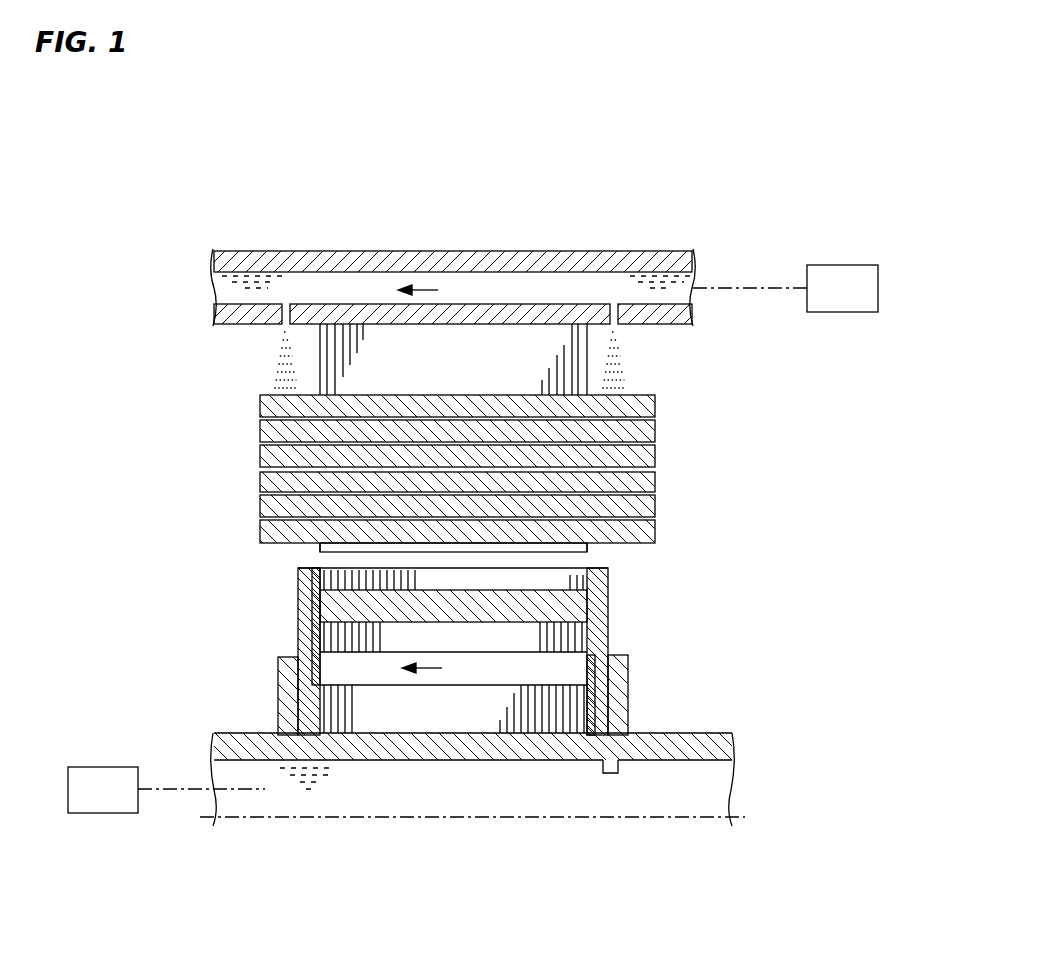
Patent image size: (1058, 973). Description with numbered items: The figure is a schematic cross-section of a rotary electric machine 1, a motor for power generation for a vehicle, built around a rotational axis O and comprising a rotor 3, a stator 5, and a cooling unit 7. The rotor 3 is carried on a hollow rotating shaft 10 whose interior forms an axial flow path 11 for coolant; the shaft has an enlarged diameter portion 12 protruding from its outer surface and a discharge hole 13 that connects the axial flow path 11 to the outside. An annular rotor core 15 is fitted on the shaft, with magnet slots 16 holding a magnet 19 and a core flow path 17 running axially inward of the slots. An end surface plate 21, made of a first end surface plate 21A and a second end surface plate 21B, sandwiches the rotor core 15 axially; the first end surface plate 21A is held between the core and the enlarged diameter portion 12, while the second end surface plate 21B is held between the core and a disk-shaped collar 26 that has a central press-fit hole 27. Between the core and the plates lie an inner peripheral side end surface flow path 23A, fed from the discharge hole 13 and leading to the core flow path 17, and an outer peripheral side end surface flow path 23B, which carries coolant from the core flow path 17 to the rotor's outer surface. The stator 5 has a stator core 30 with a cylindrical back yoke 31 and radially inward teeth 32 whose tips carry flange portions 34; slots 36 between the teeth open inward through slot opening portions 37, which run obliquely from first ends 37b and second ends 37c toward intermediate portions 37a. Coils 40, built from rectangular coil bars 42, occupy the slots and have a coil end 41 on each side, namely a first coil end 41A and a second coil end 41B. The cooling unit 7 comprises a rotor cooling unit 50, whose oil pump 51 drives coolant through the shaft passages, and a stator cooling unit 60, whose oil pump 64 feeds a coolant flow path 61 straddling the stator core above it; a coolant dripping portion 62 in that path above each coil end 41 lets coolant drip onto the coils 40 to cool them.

The rotary electric machine 1 is at (724, 212).
The rotor 3 is at (624, 641).
The stator 5 is at (670, 382).
The cooling unit 7 is at (479, 511).
The rotating shaft 10 is at (262, 735).
The axial flow path 11 is at (256, 798).
The enlarged diameter portion 12 is at (288, 675).
The discharge hole 13 is at (594, 740).
The rotor core 15 is at (418, 717).
The magnet slots 16 is at (575, 612).
The core flow path 17 is at (462, 676).
The magnet 19 is at (603, 620).
The end surface plate 21 is at (468, 650).
The first end surface plate 21A is at (302, 585).
The second end surface plate 21B is at (603, 673).
The inner peripheral side end surface flow path 23A is at (592, 705).
The outer peripheral side end surface flow path 23B is at (312, 628).
The collar 26 is at (620, 714).
The press-fit hole 27 is at (618, 760).
The stator core 30 is at (456, 318).
The back yoke 31 is at (388, 340).
The teeth 32 is at (532, 527).
The flange portions 34 is at (555, 542).
The slots 36 is at (557, 410).
The slot opening portions 37 is at (365, 540).
The intermediate portions 37a is at (458, 545).
The first ends 37b is at (320, 548).
The second ends 37c is at (590, 548).
The coils 40 is at (258, 432).
The coil end 41 is at (514, 465).
The first coil end 41A is at (265, 457).
The second coil end 41B is at (655, 482).
The coil bars 42 is at (262, 422).
The rotor cooling unit 50 is at (345, 795).
The oil pump 51 is at (100, 767).
The stator cooling unit 60 is at (563, 230).
The coolant flow path 61 is at (507, 288).
The coolant dripping portion 62 is at (288, 302).
The oil pump 64 is at (862, 265).
The rotational axis O is at (718, 820).